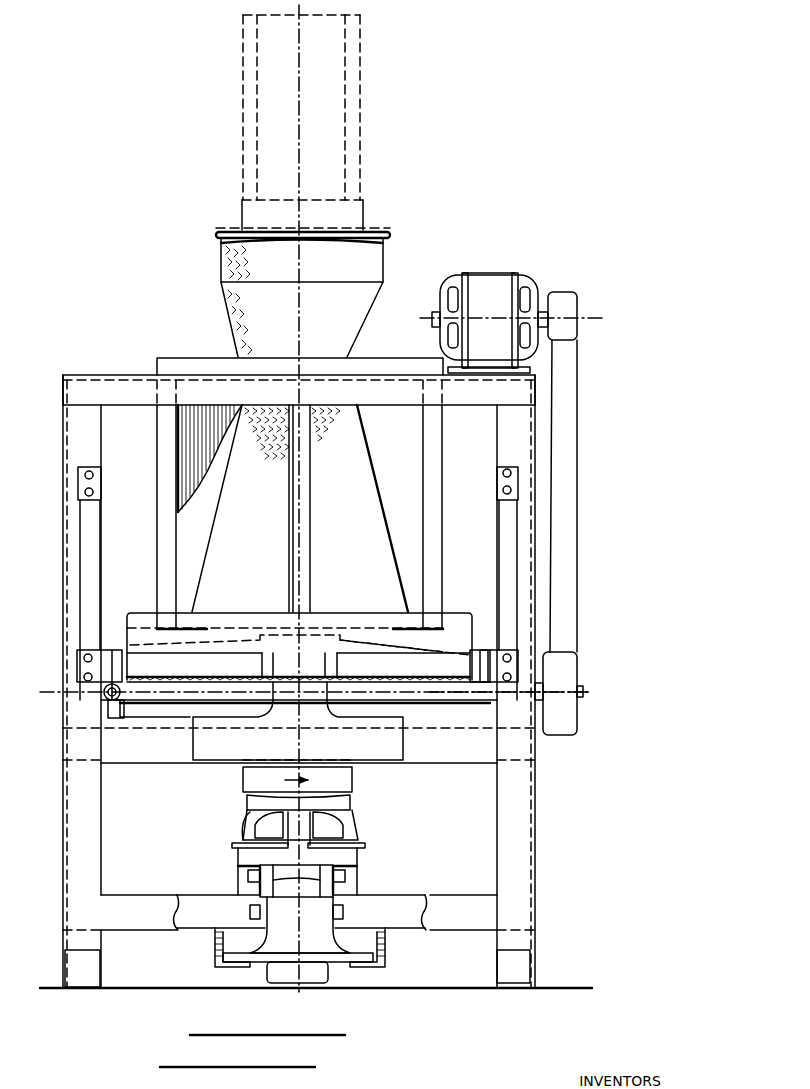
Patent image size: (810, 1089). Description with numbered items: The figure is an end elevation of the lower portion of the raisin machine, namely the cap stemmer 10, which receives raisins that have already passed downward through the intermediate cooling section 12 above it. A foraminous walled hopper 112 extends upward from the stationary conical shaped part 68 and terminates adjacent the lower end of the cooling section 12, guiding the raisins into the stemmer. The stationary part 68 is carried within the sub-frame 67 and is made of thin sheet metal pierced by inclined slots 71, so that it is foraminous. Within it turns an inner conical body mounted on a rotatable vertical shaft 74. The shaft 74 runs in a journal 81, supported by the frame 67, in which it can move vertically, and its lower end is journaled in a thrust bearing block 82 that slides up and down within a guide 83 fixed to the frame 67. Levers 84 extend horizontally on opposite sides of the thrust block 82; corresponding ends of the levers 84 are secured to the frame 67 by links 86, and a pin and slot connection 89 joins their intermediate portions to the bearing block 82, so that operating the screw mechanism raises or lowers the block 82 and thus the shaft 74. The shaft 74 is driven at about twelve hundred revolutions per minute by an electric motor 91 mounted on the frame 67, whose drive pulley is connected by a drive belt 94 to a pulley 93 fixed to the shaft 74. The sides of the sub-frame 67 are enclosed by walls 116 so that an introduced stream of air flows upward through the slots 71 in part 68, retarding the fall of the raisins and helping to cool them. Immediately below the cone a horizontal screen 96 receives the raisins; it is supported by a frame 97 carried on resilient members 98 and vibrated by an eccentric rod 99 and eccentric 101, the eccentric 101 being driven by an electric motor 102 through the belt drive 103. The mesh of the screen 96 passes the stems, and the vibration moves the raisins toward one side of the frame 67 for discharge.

The cap stemmer 10 is at (147, 582).
The intermediate cooling section 12 is at (363, 131).
The foraminous walled hopper 112 is at (380, 262).
The sub-frame 67 is at (442, 528).
The stationary conical shaped part 68 is at (367, 460).
The inclined slots 71 is at (240, 427).
The walls 116 is at (199, 491).
The resilient members 98 is at (98, 533).
The electric motor 102 is at (482, 283).
The belt drive 103 is at (575, 375).
The horizontal screen 96 is at (187, 673).
The frame 97 is at (464, 684).
The eccentric rod 99 is at (105, 693).
The eccentric 101 is at (124, 717).
The journal 81 is at (283, 705).
The drive belt 94 is at (349, 777).
The pulley 93 is at (350, 801).
The rotatable vertical shaft 74 is at (305, 827).
The electric motor 91 is at (248, 823).
The levers 84 is at (234, 865).
The pin and slot connection 89 is at (253, 875).
The thrust bearing block 82 is at (338, 892).
The links 86 is at (258, 898).
The guide 83 is at (316, 930).